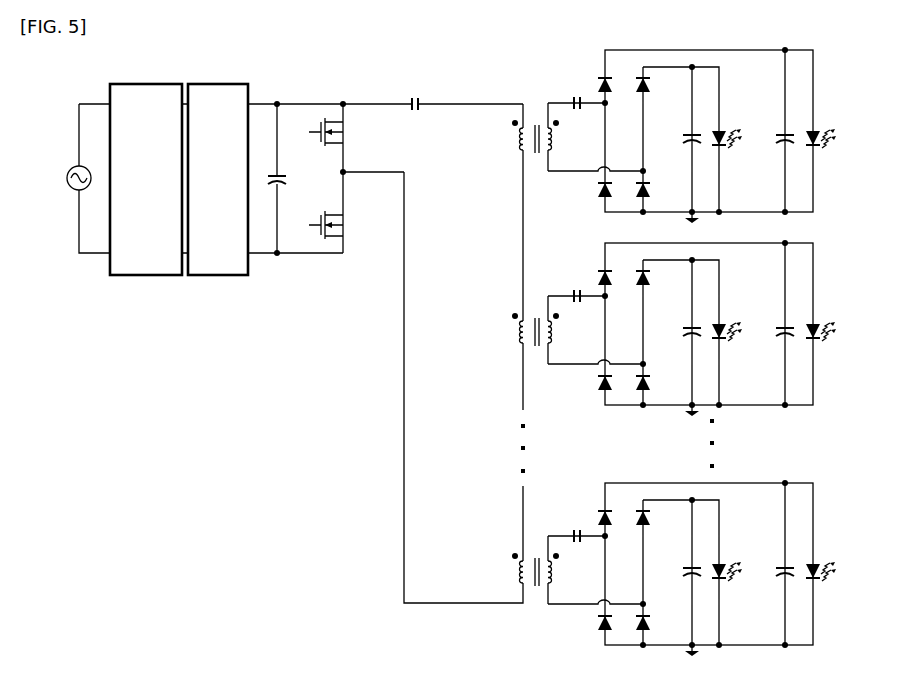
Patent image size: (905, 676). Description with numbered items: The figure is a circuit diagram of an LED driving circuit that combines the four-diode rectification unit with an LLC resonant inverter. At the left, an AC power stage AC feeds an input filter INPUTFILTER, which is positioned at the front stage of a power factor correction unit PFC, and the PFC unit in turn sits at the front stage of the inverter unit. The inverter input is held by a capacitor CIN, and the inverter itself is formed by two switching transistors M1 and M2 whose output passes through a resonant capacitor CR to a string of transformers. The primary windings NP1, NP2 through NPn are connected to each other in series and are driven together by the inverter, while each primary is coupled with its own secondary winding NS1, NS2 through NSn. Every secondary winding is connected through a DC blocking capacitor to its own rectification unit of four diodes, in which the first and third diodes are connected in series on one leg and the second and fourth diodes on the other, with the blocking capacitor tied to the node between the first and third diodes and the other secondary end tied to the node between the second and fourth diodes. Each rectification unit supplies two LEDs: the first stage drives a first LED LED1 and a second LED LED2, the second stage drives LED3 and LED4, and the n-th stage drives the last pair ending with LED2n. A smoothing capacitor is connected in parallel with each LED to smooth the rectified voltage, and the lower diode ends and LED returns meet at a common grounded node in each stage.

The AC power stage AC is at (65, 178).
The input filter INPUTFILTER is at (146, 179).
The PFC unit PFC is at (218, 179).
The input capacitor CIN is at (294, 178).
The first switch of the inverter M1 is at (316, 124).
The second switch of the inverter M2 is at (316, 217).
The resonant capacitor CR is at (433, 92).
The first primary winding NP1 is at (510, 136).
The second primary winding NP2 is at (510, 329).
The n-th primary winding NPn is at (510, 569).
The first secondary winding NS1 is at (569, 136).
The second secondary winding NS2 is at (569, 329).
The n-th secondary winding NSn is at (569, 569).
The first LED LED1 is at (741, 149).
The second LED LED2 is at (834, 149).
The first LED of the second stage LED3 is at (741, 342).
The second LED of the second stage LED4 is at (834, 342).
The second LED of the n-th stage LED2n is at (839, 582).